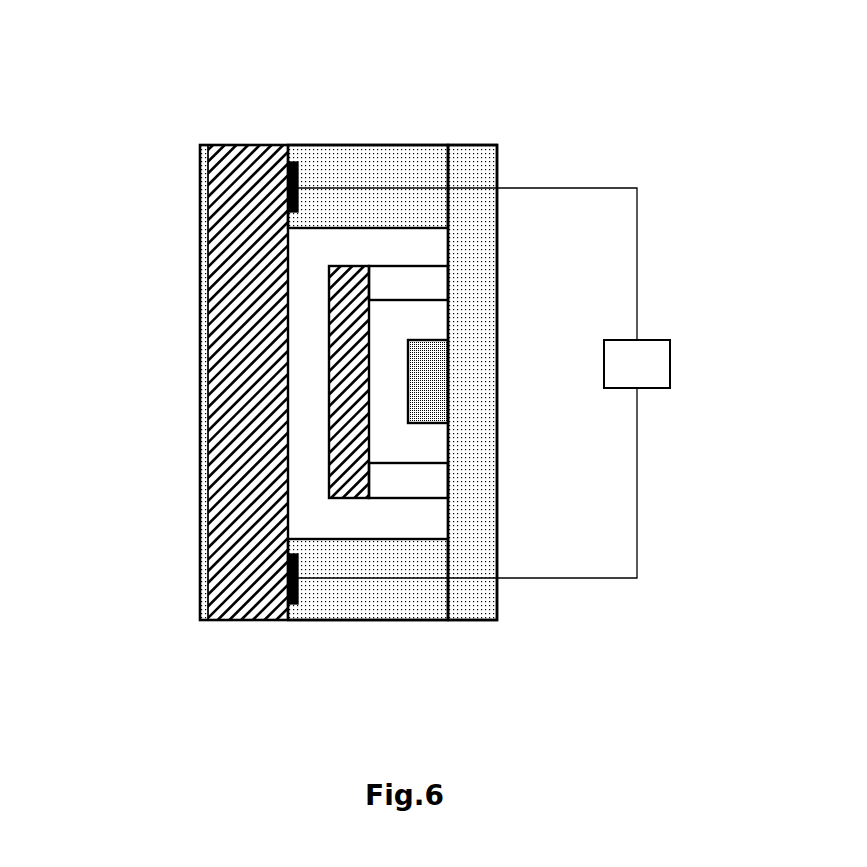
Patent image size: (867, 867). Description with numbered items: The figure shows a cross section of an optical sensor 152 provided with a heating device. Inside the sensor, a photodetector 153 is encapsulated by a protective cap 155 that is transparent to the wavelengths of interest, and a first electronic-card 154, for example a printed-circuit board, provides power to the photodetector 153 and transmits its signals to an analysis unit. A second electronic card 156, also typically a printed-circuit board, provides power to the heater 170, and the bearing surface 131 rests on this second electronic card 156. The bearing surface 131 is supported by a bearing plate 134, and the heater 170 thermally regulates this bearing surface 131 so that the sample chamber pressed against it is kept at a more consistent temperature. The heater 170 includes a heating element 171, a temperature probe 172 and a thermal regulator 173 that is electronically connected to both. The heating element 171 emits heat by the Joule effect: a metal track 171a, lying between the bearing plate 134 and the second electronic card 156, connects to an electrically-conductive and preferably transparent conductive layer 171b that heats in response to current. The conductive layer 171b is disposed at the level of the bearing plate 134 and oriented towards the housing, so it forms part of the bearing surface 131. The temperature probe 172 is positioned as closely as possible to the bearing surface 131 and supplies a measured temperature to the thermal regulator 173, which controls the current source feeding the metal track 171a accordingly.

The bearing surface 131 is at (381, 354).
The bearing plate 134 is at (242, 500).
The optical sensor 152 is at (381, 354).
The photodetector 153 is at (449, 382).
The first electronic-card 154 is at (497, 272).
The protective cap 155 is at (320, 382).
The second electronic card 156 is at (367, 145).
The heater 170 is at (528, 383).
The heating element 171 is at (381, 354).
The metal track 171a is at (286, 188).
The conductive layer 171b is at (200, 188).
The temperature probe 172 is at (283, 586).
The thermal regulator 173 is at (637, 364).